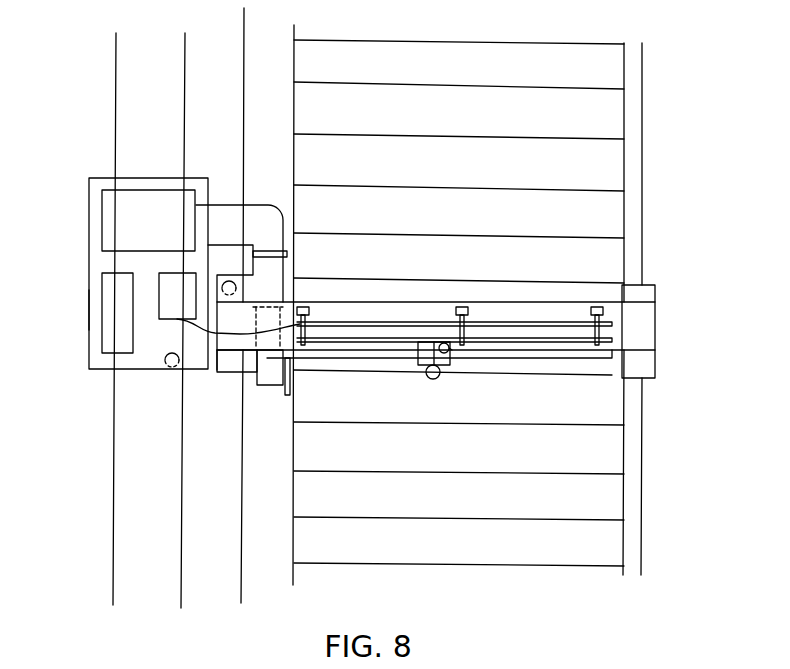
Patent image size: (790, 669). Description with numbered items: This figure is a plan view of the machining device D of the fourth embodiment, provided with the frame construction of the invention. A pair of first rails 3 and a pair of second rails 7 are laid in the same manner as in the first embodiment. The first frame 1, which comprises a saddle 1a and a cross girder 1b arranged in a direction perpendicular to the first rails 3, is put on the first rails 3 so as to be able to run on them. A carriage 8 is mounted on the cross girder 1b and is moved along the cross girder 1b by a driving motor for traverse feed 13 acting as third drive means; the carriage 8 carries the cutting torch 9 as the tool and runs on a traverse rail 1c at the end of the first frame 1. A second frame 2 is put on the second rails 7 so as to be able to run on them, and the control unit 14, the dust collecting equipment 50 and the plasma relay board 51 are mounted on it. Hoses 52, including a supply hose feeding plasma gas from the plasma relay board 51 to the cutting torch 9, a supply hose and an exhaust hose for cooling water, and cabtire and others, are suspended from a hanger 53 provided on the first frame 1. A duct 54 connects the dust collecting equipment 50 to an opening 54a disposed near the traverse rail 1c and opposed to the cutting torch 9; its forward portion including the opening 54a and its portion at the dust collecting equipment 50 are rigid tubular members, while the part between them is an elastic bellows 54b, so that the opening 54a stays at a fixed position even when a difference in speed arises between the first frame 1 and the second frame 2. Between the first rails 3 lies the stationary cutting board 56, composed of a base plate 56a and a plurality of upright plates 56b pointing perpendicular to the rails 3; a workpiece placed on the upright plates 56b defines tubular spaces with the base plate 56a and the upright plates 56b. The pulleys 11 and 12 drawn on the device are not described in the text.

The machining device D is at (88, 199).
The first frame 1 is at (656, 343).
The saddle 1a is at (233, 363).
The cross girder 1b is at (647, 320).
The traverse rail 1c is at (578, 361).
The second frame 2 is at (88, 308).
The first rails 3 is at (241, 575).
The second rails 7 is at (113, 520).
The carriage 8 is at (449, 356).
The cutting torch 9 is at (433, 380).
The pulley 11 is at (229, 280).
The pulley 12 is at (172, 372).
The driving motor for traverse feed 13 is at (450, 349).
The control unit 14 is at (113, 329).
The dust collecting equipment 50 is at (100, 236).
The plasma relay board 51 is at (170, 308).
The hoses 52 is at (427, 353).
The hanger 53 is at (530, 328).
The duct 54 is at (258, 192).
The opening 54a is at (272, 386).
The elastic bellows 54b is at (288, 258).
The stationary cutting board 56 is at (502, 68).
The base plate 56a is at (380, 60).
The upright plates 56b is at (420, 84).